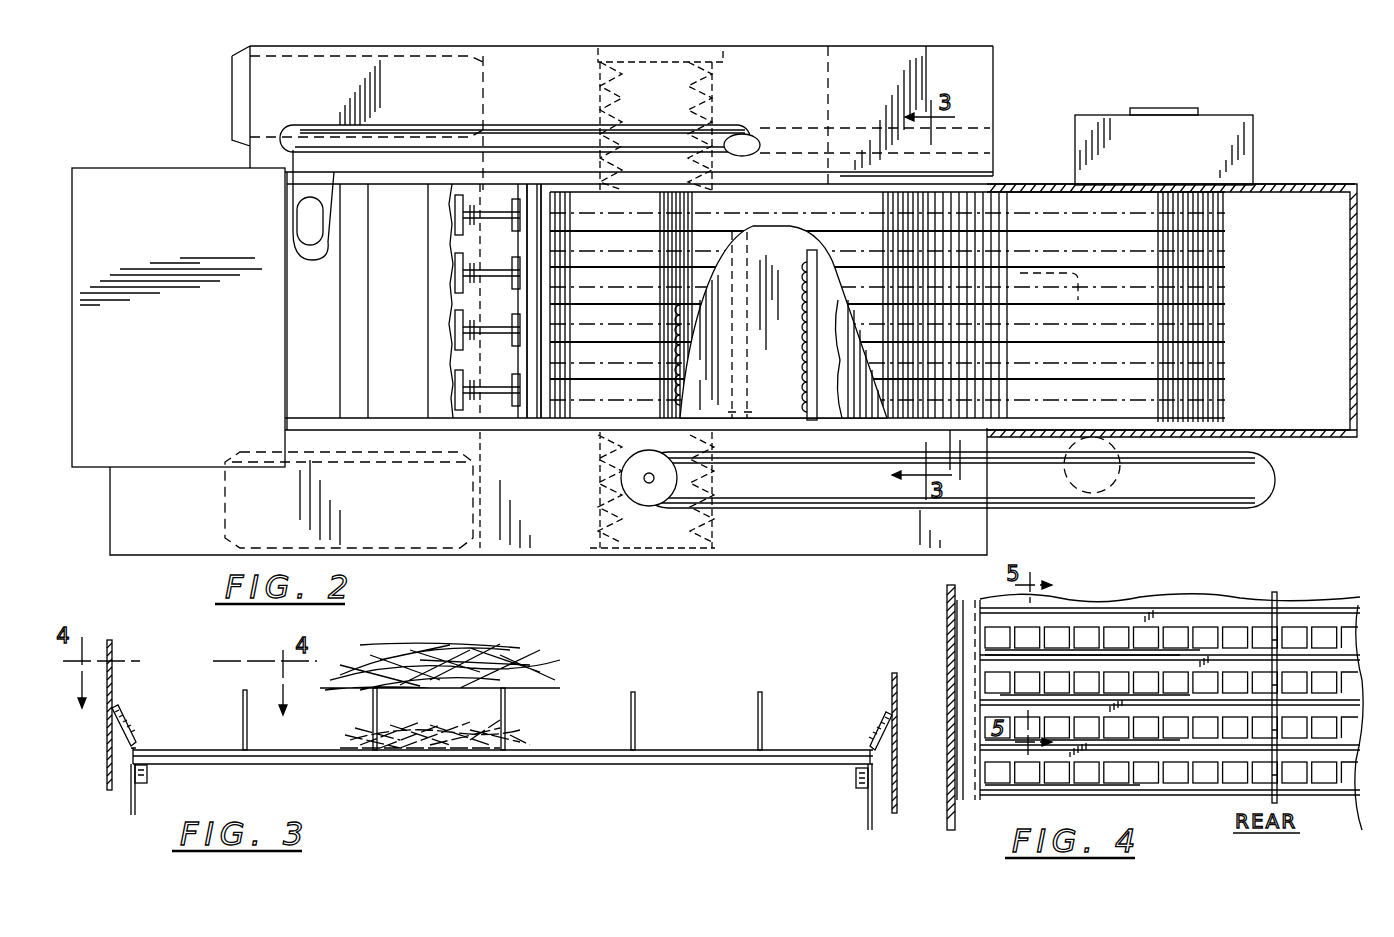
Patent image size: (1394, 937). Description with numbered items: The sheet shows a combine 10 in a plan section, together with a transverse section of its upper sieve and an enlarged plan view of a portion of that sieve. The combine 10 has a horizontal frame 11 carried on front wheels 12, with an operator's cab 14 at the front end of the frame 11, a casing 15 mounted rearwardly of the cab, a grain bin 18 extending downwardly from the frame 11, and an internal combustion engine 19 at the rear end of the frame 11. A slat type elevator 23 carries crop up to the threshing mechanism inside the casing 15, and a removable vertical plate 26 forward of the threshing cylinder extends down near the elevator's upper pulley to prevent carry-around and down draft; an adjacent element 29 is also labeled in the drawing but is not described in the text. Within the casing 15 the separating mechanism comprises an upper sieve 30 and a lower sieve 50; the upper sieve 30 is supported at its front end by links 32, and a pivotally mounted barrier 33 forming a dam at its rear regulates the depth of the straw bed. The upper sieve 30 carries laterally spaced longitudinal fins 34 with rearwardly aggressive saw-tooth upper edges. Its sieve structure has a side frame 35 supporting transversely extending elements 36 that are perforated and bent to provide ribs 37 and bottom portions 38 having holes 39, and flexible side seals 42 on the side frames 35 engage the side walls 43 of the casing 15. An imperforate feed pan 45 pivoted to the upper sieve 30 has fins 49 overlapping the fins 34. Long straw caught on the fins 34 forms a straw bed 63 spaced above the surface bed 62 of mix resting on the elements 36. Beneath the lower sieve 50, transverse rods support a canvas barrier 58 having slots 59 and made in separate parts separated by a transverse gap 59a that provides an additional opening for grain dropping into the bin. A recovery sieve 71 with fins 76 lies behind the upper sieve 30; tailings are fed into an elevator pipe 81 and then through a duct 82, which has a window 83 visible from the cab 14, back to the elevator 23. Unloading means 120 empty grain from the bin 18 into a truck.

In FIG. 2, the combine 10 is at (204, 126).
In FIG. 2, the horizontal frame 11 is at (307, 52).
In FIG. 2, the front wheels 12 is at (228, 510).
In FIG. 2, the operator's cab 14 is at (158, 360).
In FIG. 2, the casing 15 is at (1290, 186).
In FIG. 2, the grain bin 18 is at (960, 64).
In FIG. 2, the internal combustion engine 19 is at (1238, 144).
In FIG. 2, the slat type elevator 23 is at (497, 180).
In FIG. 2, the removable vertical plate 26 is at (550, 192).
In FIG. 2, the frame rail 29 is at (530, 180).
In FIG. 2, the upper sieve 30 is at (775, 204).
In FIG. 3, the links 32 is at (136, 800).
In FIG. 2, the barrier 33 is at (968, 212).
In FIG. 2, the fins 34 is at (872, 270).
In FIG. 3, the fins 34 is at (636, 710).
In FIG. 4, the fins 34 is at (1276, 594).
In FIG. 3, the side frame 35 is at (138, 748).
In FIG. 4, the transversely extending elements 36 is at (1175, 702).
In FIG. 4, the ribs 37 is at (1368, 841).
In FIG. 4, the bottom portions 38 is at (1179, 719).
In FIG. 4, the holes 39 is at (1345, 783).
In FIG. 3, the flexible side seals 42 is at (126, 718).
In FIG. 3, the side walls 43 is at (113, 677).
In FIG. 4, the side walls 43 is at (957, 800).
In FIG. 2, the imperforate feed pan 45 is at (887, 303).
In FIG. 2, the fins 49 is at (594, 310).
In FIG. 2, the lower sieve 50 is at (848, 333).
In FIG. 2, the canvas barrier 58 is at (784, 274).
In FIG. 2, the slots 59 is at (683, 325).
In FIG. 2, the transverse gap 59a is at (742, 268).
In FIG. 3, the surface bed 62 is at (530, 740).
In FIG. 3, the straw bed 63 is at (540, 664).
In FIG. 2, the recovery sieve 71 is at (1011, 305).
In FIG. 2, the fins 76 is at (1110, 233).
In FIG. 2, the elevator pipe 81 is at (399, 130).
In FIG. 2, the duct 82 is at (300, 180).
In FIG. 2, the window 83 is at (312, 221).
In FIG. 2, the unloading means 120 is at (1045, 500).